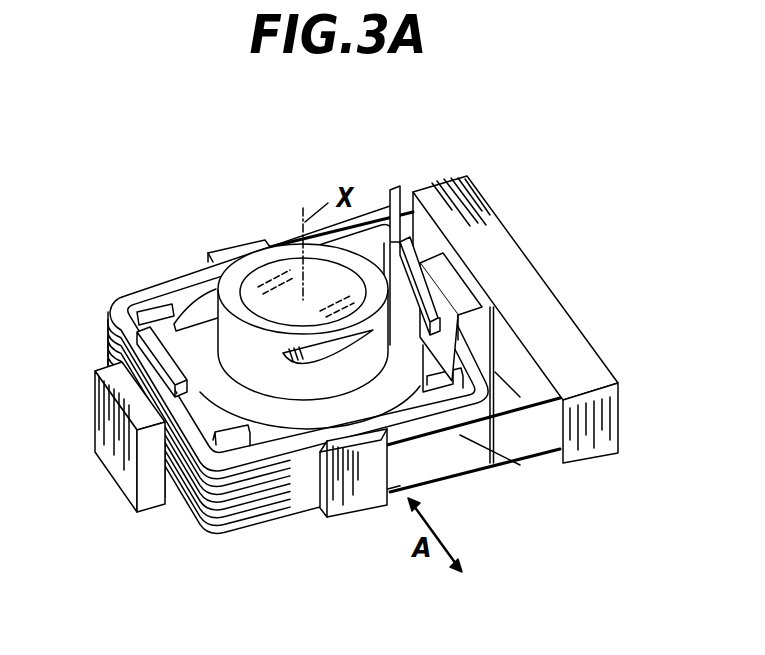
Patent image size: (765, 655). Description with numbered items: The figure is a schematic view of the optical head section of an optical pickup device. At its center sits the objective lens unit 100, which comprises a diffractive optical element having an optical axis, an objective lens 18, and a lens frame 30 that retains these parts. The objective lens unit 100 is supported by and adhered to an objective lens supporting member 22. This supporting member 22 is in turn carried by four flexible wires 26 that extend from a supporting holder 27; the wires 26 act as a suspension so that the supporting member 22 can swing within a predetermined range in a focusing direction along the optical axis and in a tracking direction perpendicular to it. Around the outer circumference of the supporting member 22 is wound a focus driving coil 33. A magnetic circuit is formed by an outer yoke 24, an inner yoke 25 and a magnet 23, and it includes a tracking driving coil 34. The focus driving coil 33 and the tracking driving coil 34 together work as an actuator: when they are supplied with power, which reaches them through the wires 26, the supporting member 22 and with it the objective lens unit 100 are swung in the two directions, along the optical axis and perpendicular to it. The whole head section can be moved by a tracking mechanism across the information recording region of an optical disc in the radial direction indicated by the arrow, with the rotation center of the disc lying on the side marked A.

The objective lens unit 100 is at (297, 287).
The objective lens 18 is at (260, 278).
The lens frame 30 is at (230, 278).
The objective lens supporting member 22 is at (174, 324).
The magnet 23 is at (440, 275).
The outer yoke 24 is at (102, 420).
The inner yoke 25 is at (390, 260).
The wires 26 is at (438, 485).
The supporting holder 27 is at (550, 305).
The focus driving coil 33 is at (223, 510).
The tracking driving coil 34 is at (162, 462).